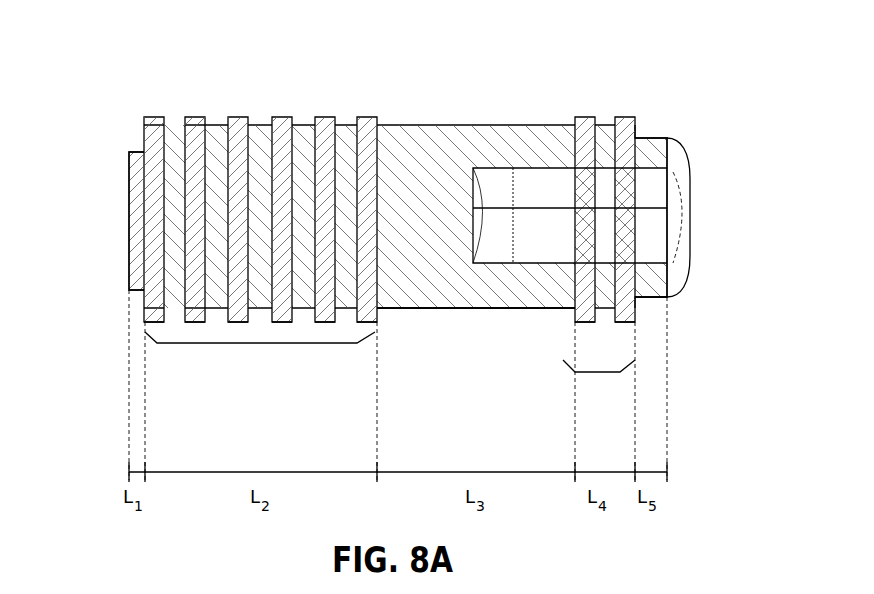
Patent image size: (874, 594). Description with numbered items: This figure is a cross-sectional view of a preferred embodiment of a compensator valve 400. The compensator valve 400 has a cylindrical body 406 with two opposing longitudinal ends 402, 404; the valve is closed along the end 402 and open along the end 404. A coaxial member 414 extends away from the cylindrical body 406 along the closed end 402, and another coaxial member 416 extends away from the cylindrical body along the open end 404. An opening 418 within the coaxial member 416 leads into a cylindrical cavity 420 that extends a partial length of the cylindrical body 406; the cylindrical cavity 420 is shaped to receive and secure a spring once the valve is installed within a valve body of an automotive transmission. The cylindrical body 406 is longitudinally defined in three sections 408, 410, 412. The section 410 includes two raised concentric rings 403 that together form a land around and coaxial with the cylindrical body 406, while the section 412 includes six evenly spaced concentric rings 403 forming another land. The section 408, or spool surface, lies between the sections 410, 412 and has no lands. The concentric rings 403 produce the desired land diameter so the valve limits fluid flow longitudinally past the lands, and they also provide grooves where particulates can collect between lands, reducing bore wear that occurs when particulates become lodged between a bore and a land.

The compensator valve 400 is at (490, 88).
The longitudinal end 402 is at (102, 227).
The concentric rings 403 is at (277, 117).
The longitudinal end 404 is at (711, 202).
The cylindrical body 406 is at (458, 313).
The spool surface section 408 is at (415, 308).
The section 410 is at (600, 372).
The section 412 is at (257, 343).
The coaxial member 414 is at (130, 172).
The coaxial member 416 is at (667, 138).
The opening 418 is at (675, 282).
The cylindrical cavity 420 is at (673, 235).